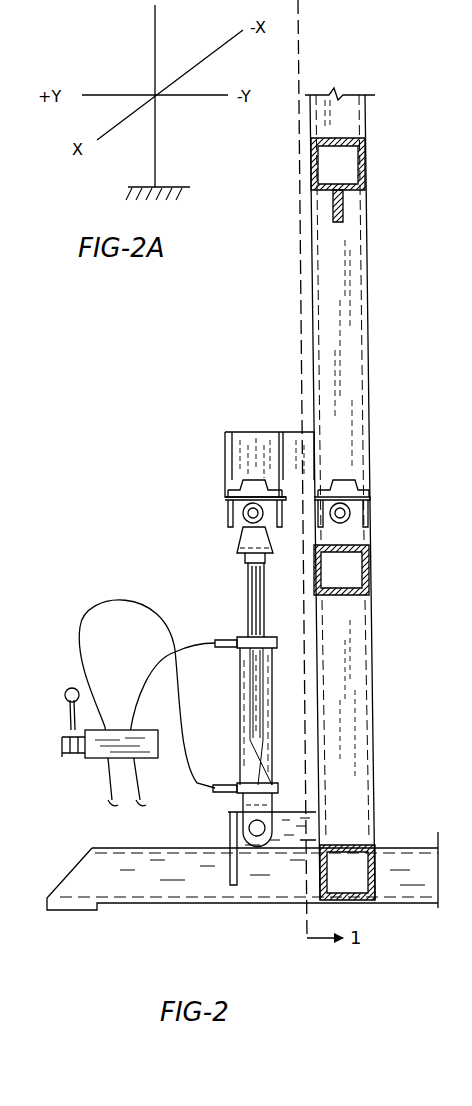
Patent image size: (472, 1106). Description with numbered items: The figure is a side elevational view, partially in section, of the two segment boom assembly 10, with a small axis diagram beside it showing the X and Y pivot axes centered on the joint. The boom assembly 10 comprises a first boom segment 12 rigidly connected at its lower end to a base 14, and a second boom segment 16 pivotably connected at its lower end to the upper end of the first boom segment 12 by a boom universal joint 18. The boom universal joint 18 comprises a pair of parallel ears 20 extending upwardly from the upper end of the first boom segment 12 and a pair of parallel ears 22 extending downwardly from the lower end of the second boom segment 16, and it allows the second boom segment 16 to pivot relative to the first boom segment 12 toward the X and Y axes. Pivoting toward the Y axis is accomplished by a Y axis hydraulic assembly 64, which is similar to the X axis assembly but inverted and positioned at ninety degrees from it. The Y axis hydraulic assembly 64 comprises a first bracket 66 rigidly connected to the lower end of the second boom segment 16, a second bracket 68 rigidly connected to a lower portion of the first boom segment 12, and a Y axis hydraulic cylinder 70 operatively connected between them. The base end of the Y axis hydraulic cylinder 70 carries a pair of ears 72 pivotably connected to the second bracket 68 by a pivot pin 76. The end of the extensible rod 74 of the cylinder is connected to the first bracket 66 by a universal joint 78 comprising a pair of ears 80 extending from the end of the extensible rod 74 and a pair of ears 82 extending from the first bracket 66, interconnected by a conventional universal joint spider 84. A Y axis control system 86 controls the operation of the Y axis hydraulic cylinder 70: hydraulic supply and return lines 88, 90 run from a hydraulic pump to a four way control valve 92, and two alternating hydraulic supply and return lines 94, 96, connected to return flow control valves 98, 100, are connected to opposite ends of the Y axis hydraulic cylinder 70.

In FIG. 2, the boom assembly 10 is at (387, 205).
In FIG. 2A, the first boom segment 12 is at (157, 152).
In FIG. 2, the first boom segment 12 is at (372, 670).
In FIG. 2, the base 14 is at (400, 845).
In FIG. 2A, the second boom segment 16 is at (155, 27).
In FIG. 2, the second boom segment 16 is at (366, 262).
In FIG. 2A, the boom universal joint 18 is at (157, 97).
In FIG. 2, the boom universal joint 18 is at (352, 515).
In FIG. 2, the ears 20 is at (365, 533).
In FIG. 2, the ears 22 is at (370, 497).
In FIG. 2, the Y axis hydraulic assembly 64 is at (155, 540).
In FIG. 2, the first bracket 66 is at (293, 432).
In FIG. 2, the second bracket 68 is at (297, 810).
In FIG. 2, the Y axis hydraulic cylinder 70 is at (273, 658).
In FIG. 2, the ears 72 is at (260, 742).
In FIG. 2, the extensible rod 74 is at (247, 587).
In FIG. 2, the pivot pin 76 is at (230, 817).
In FIG. 2, the universal joint 78 is at (206, 492).
In FIG. 2, the ears 80 is at (237, 540).
In FIG. 2, the ears 82 is at (226, 498).
In FIG. 2, the universal joint spider 84 is at (228, 517).
In FIG. 2, the Y axis control system 86 is at (131, 685).
In FIG. 2, the hydraulic supply and return line 88 is at (105, 797).
In FIG. 2, the hydraulic supply and return line 90 is at (140, 793).
In FIG. 2, the four way control valve 92 is at (93, 760).
In FIG. 2, the alternating hydraulic supply and return line 94 is at (82, 628).
In FIG. 2, the alternating hydraulic supply and return line 96 is at (165, 663).
In FIG. 2, the return flow control valve 98 is at (232, 777).
In FIG. 2, the return flow control valve 100 is at (227, 648).